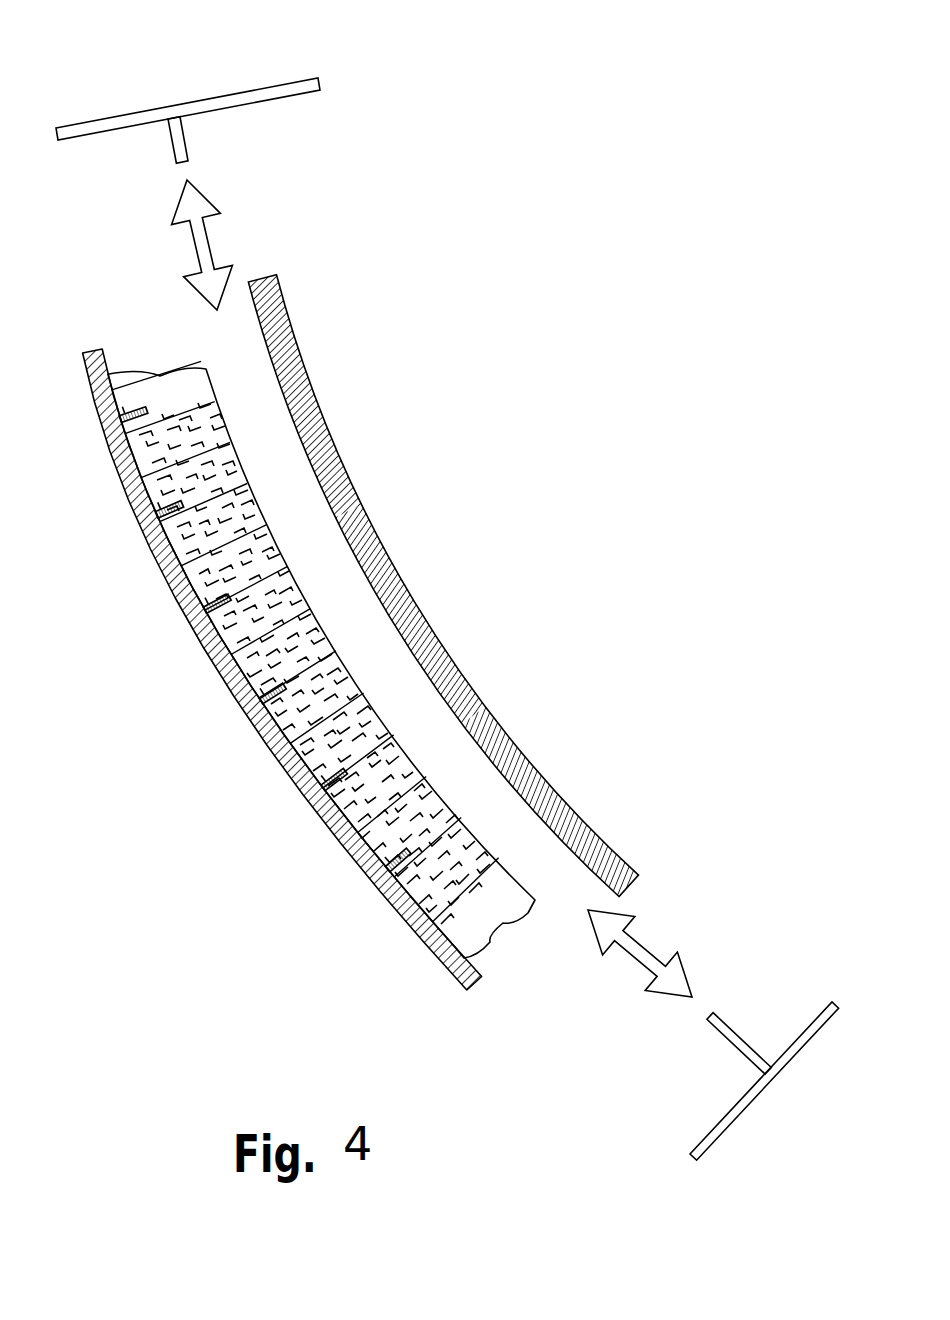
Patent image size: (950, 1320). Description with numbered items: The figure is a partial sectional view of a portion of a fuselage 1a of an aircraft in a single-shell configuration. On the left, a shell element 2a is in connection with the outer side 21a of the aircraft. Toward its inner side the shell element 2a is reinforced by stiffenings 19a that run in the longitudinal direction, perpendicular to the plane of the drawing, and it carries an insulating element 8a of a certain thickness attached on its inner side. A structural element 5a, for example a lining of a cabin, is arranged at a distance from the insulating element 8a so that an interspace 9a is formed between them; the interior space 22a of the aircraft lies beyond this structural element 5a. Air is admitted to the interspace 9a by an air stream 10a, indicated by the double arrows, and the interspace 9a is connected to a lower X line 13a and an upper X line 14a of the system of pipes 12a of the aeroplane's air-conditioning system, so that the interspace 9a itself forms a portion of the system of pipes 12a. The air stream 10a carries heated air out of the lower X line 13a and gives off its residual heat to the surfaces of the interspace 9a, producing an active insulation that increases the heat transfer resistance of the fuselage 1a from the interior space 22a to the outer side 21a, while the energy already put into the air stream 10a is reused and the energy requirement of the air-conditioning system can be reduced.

The fuselage 1a is at (82, 558).
The shell element 2a is at (128, 336).
The structural element 5a is at (360, 515).
The insulating element 8a is at (293, 787).
The interspace 9a is at (363, 632).
The air stream 10a is at (200, 245).
The system of pipes 12a is at (272, 148).
The lower X line 13a is at (725, 1127).
The upper X line 14a is at (100, 127).
The stiffenings 19a is at (220, 663).
The outer side 21a is at (98, 830).
The interior space 22a is at (659, 495).